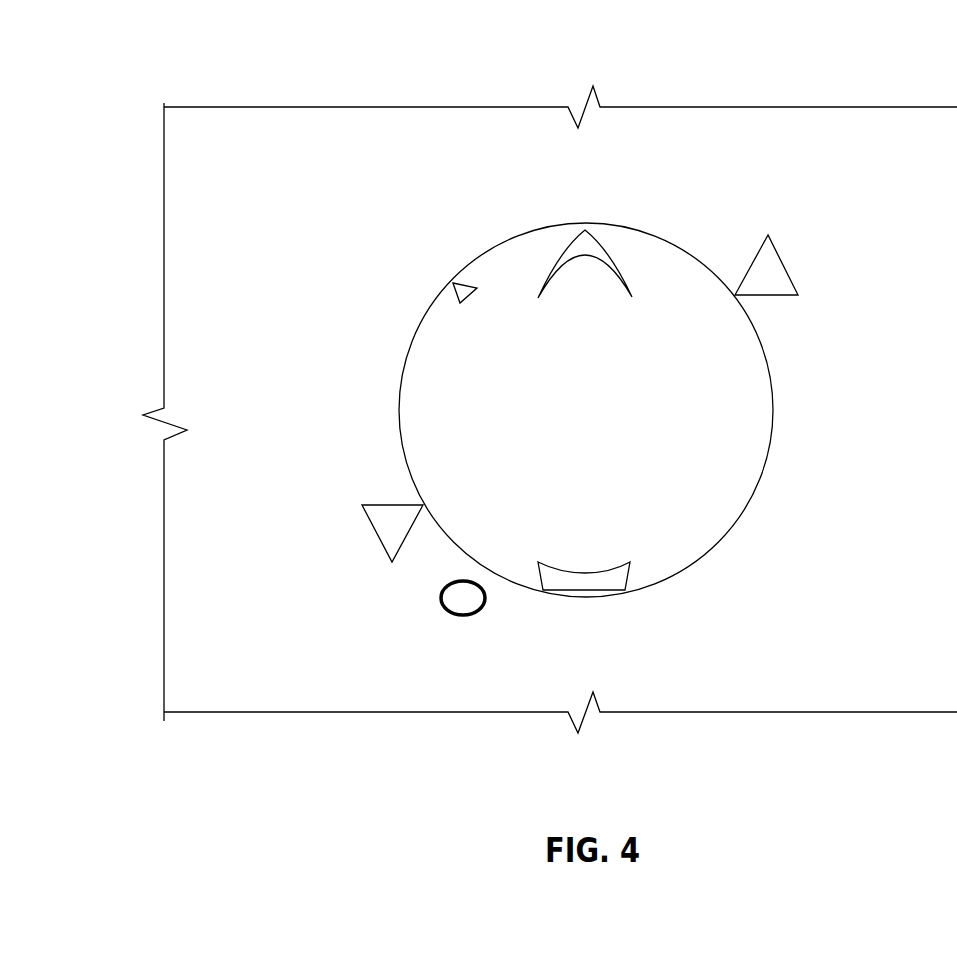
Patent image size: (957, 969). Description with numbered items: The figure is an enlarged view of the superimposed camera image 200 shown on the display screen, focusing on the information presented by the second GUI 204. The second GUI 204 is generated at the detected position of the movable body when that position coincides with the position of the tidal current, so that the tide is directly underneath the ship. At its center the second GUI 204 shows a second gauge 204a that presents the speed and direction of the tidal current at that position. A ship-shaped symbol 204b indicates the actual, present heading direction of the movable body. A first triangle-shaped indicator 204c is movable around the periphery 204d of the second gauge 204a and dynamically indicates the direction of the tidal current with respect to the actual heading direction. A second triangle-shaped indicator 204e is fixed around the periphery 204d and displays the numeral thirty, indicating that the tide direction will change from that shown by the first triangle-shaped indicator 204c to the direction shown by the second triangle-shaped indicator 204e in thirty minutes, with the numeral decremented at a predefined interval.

The superimposed camera image 200 is at (246, 69).
The second GUI 204 is at (592, 437).
The second gauge 204a is at (659, 551).
The ship-shaped symbol 204b is at (558, 244).
The first triangle-shaped indicator 204c is at (801, 252).
The periphery 204d is at (785, 388).
The second triangle-shaped indicator 204e is at (364, 538).